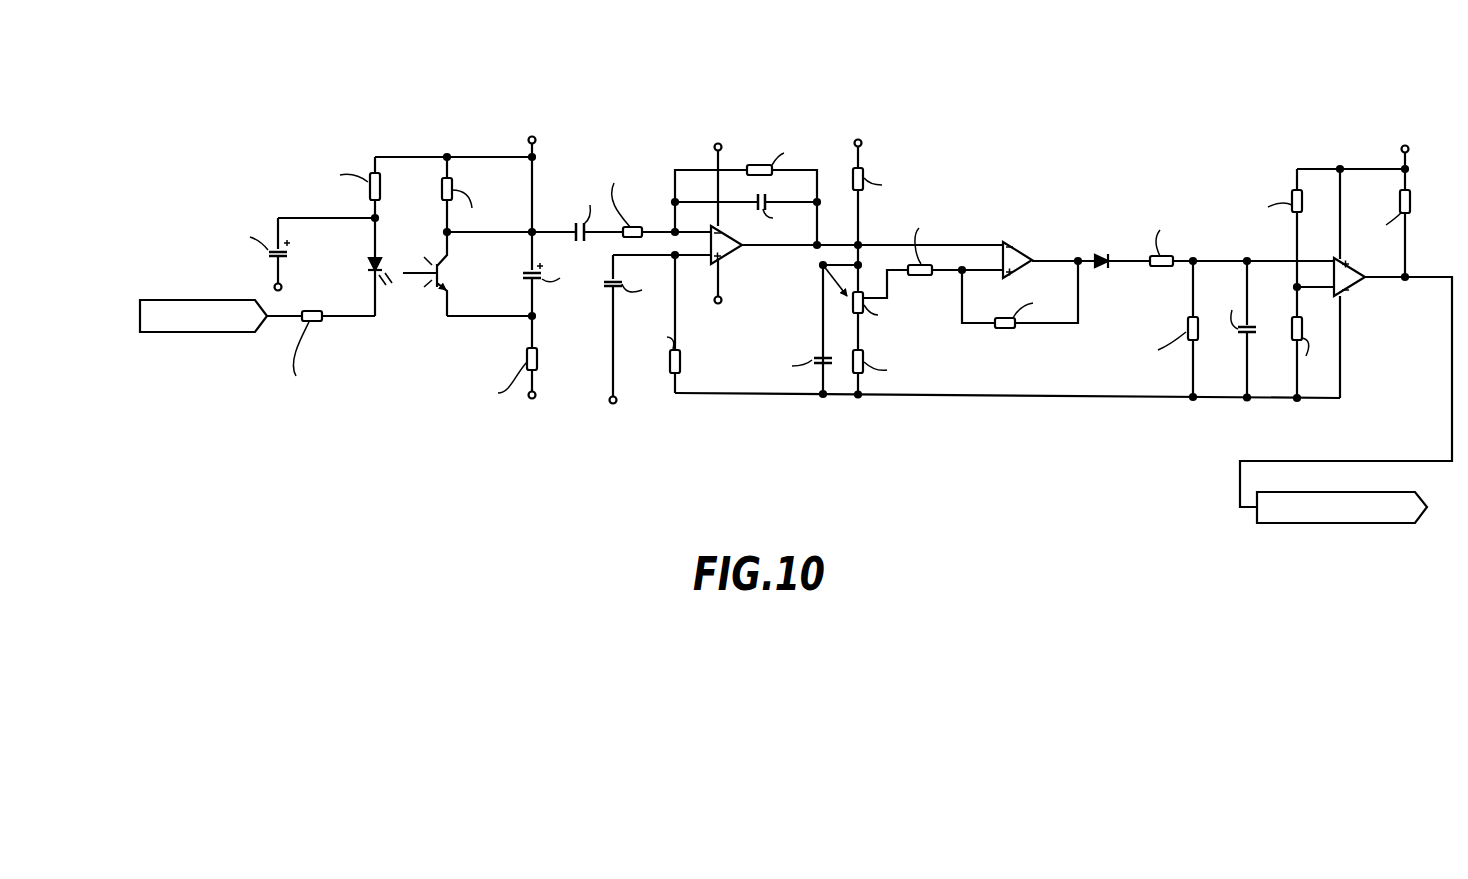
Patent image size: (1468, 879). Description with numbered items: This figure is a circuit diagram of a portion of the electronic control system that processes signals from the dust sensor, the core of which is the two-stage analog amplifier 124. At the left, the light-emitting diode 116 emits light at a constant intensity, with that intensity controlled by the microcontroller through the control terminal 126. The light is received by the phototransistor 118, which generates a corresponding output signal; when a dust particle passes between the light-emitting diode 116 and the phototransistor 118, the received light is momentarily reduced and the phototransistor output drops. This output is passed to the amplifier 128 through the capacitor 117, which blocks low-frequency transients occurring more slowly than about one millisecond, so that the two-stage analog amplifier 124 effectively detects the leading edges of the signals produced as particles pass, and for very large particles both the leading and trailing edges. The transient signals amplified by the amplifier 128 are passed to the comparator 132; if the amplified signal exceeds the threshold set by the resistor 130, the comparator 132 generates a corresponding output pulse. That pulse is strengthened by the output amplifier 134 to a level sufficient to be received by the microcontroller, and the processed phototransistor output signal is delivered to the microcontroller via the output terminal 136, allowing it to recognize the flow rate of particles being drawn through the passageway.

The two-stage analog amplifier 124 is at (745, 48).
The light-emitting diode 116 is at (379, 256).
The capacitor 117 is at (576, 228).
The phototransistor 118 is at (430, 292).
The control terminal 126 is at (218, 333).
The amplifier 128 is at (738, 257).
The resistor 130 is at (823, 265).
The comparator 132 is at (1007, 240).
The output amplifier 134 is at (1351, 291).
The output terminal 136 is at (1357, 524).